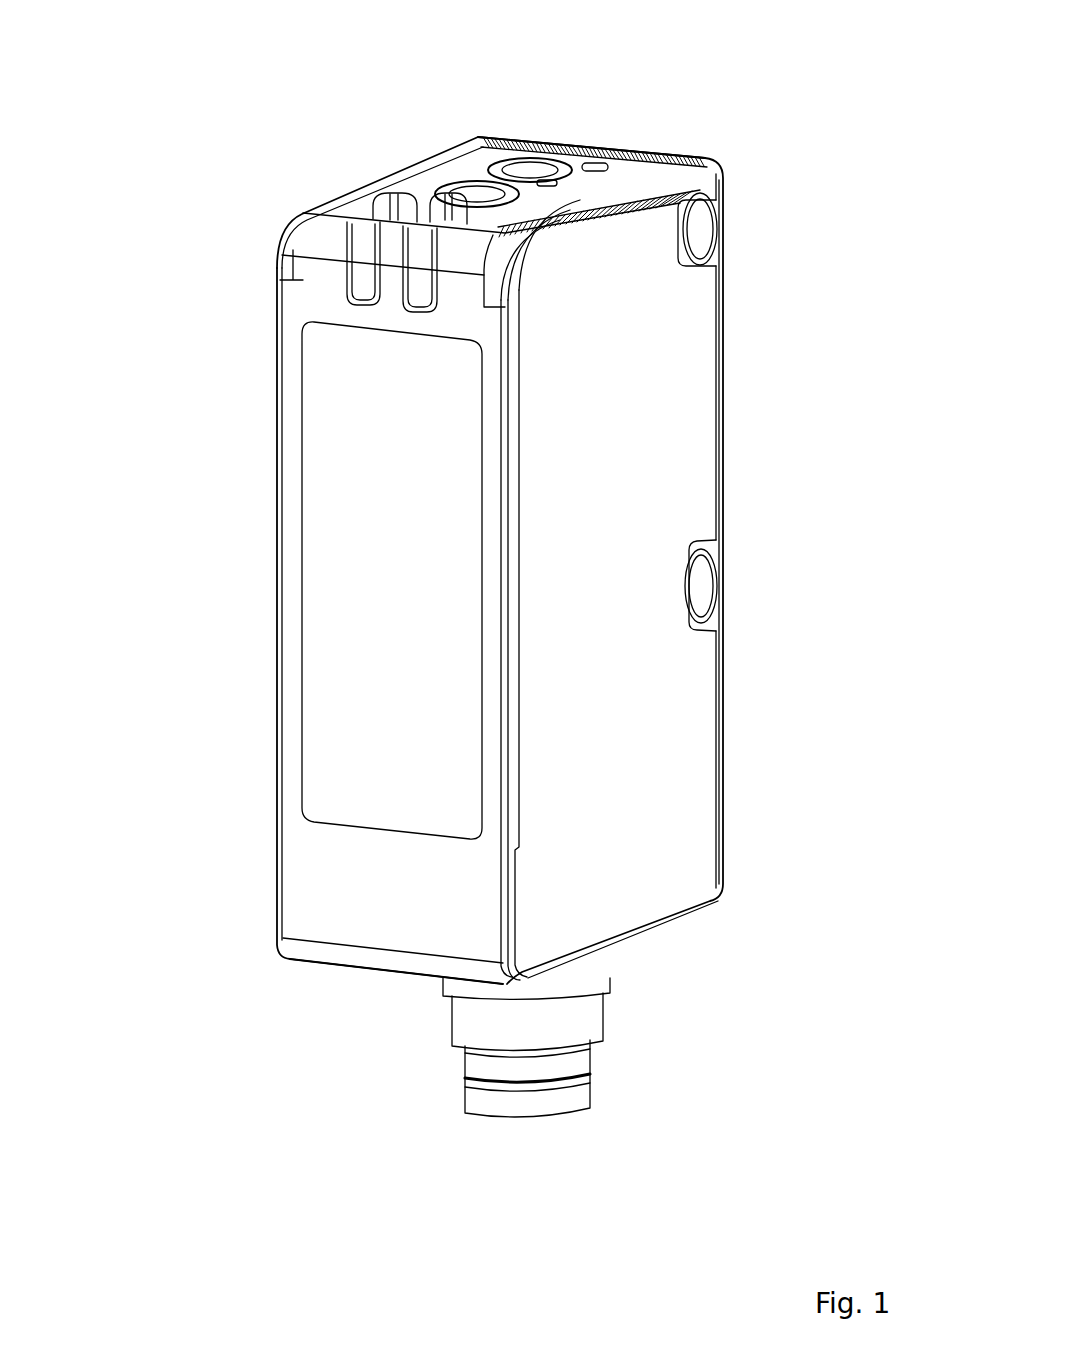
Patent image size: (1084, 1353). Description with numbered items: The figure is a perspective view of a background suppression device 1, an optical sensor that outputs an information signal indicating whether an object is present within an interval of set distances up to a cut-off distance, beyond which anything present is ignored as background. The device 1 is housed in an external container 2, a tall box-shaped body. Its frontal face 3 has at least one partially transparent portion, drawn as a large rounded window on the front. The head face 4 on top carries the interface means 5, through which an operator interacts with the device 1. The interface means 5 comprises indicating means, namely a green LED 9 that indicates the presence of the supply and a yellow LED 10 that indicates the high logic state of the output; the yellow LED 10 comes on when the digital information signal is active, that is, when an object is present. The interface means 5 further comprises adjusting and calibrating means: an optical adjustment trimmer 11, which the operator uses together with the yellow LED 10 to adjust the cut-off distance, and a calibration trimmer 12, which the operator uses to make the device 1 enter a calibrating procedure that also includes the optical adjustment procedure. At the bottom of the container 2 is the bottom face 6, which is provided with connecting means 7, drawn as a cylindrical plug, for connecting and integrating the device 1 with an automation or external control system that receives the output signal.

The background suppression device 1 is at (210, 155).
The external container 2 is at (680, 333).
The frontal face 3 is at (340, 612).
The head face 4 is at (623, 167).
The interface means 5 is at (486, 141).
The bottom face 6 is at (653, 940).
The connecting means 7 is at (590, 1012).
The green LED 9 is at (380, 203).
The yellow LED 10 is at (440, 197).
The optical adjustment trimmer 11 is at (473, 187).
The calibration trimmer 12 is at (537, 160).